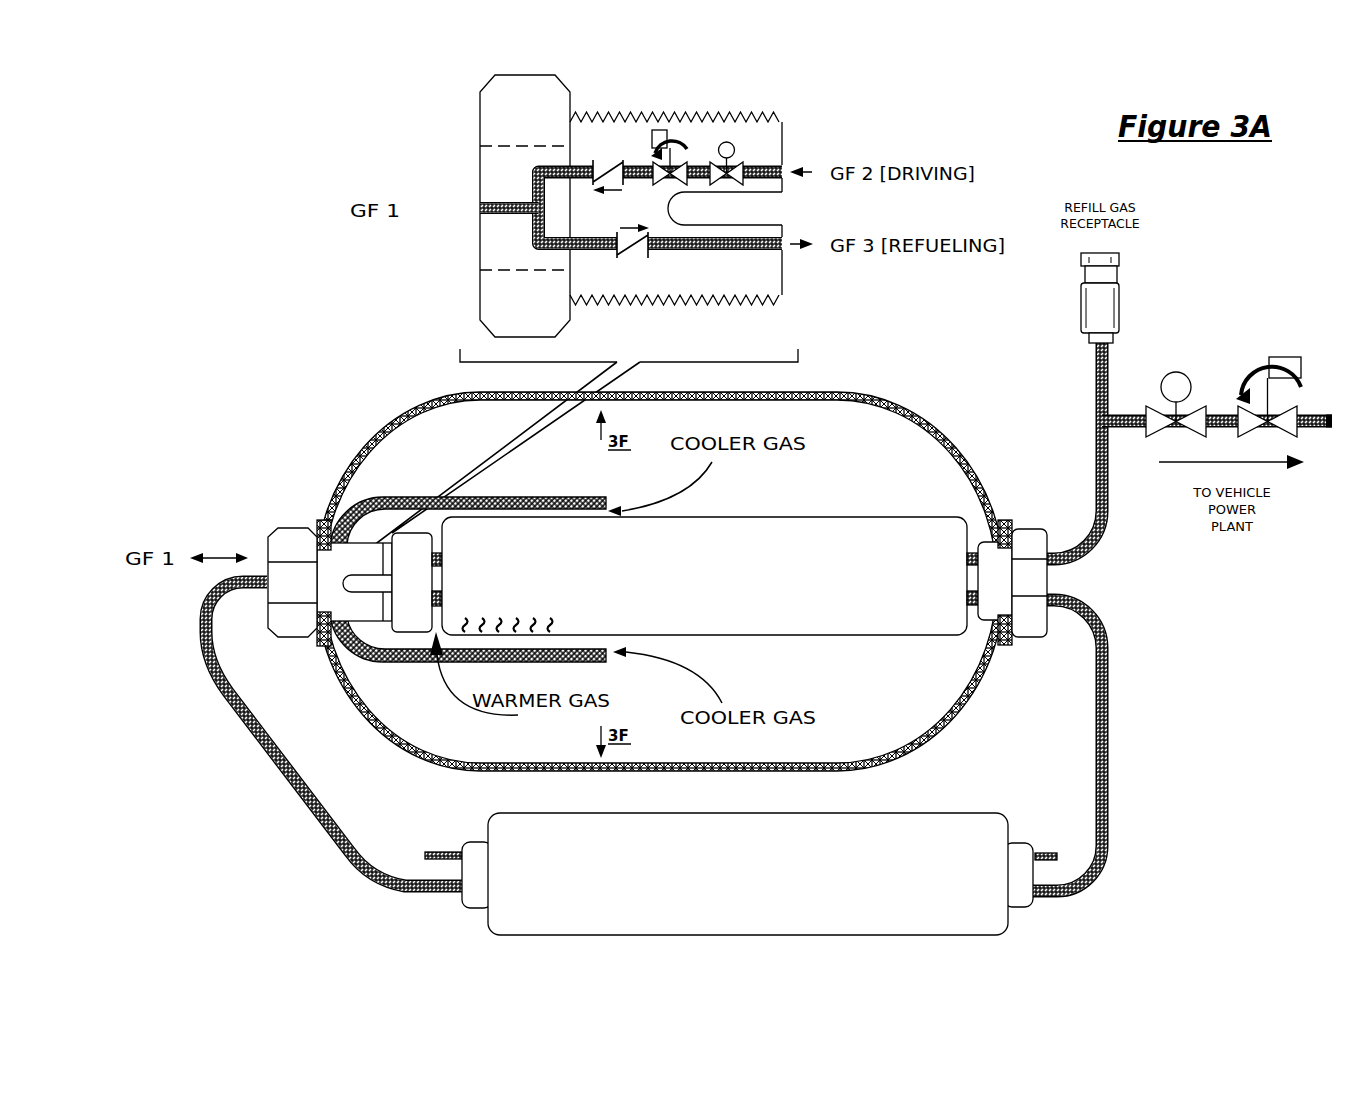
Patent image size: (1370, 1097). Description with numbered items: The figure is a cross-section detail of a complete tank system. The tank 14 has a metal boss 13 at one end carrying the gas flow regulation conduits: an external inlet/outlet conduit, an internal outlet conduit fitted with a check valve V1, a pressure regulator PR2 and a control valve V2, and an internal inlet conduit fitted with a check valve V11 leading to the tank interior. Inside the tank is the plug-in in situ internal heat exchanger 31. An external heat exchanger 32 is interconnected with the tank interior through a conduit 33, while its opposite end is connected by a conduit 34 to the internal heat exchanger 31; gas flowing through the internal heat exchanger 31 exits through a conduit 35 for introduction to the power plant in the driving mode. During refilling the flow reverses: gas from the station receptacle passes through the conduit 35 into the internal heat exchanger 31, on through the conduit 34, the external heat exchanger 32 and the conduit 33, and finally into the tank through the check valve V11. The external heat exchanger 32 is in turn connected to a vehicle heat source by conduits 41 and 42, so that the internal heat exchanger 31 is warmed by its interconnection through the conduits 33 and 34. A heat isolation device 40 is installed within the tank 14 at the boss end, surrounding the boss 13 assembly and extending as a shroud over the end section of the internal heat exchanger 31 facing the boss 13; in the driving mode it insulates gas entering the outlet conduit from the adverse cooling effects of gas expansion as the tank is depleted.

The boss 13 is at (272, 527).
The tank 14 is at (405, 422).
The internal heat exchanger 31 is at (880, 520).
The external heat exchanger 32 is at (650, 815).
The conduit 33 is at (258, 732).
The conduit 34 is at (1118, 708).
The conduit 35 is at (1076, 545).
The heat isolation device 40 is at (374, 648).
The conduit 41 is at (1048, 852).
The conduit 42 is at (447, 851).
The check valve V1 is at (605, 158).
The control valve V2 is at (729, 140).
The pressure regulator PR2 is at (667, 132).
The check valve V11 is at (634, 256).